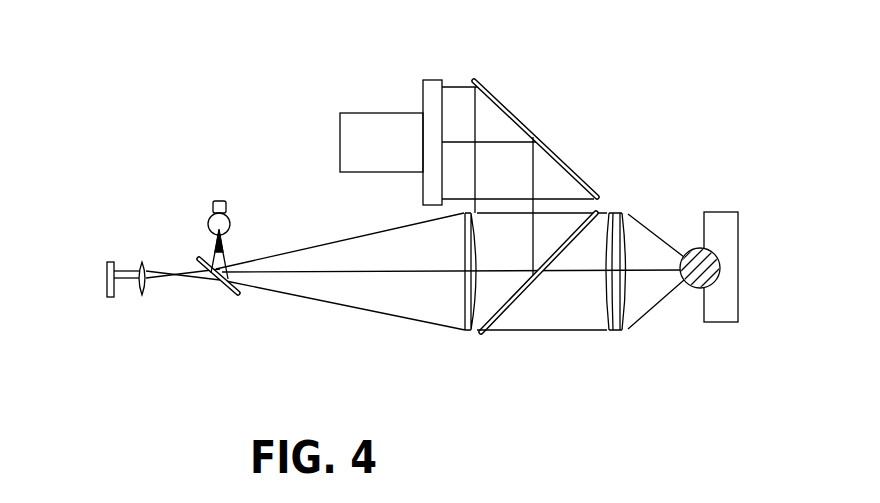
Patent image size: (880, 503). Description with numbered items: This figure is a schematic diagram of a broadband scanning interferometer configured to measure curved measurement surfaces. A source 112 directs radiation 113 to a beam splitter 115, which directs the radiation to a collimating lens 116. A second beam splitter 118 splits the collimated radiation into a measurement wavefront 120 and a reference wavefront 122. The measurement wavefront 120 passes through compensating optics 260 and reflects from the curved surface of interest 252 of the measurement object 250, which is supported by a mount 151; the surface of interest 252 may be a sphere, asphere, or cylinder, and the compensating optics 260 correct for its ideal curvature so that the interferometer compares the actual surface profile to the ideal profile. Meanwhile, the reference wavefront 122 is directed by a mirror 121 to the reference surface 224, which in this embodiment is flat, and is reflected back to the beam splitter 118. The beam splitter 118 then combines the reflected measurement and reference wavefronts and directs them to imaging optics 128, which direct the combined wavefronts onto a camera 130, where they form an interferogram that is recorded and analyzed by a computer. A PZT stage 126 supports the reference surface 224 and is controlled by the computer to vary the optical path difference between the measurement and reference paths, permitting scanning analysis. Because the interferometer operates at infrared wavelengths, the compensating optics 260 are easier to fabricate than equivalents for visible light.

The source 112 is at (212, 202).
The radiation 113 is at (224, 251).
The beam splitter 115 is at (238, 295).
The collimating lens 116 is at (462, 310).
The beam splitter 118 is at (501, 333).
The measurement wavefront 120 is at (557, 310).
The mirror 121 is at (520, 120).
The reference wavefront 122 is at (540, 190).
The PZT stage 126 is at (350, 120).
The imaging optics 128 is at (143, 296).
The camera 130 is at (107, 278).
The mount 151 is at (725, 322).
The reference surface 224 is at (433, 97).
The measurement object 250 is at (688, 247).
The surface of interest 252 is at (692, 284).
The compensating optics 260 is at (613, 332).